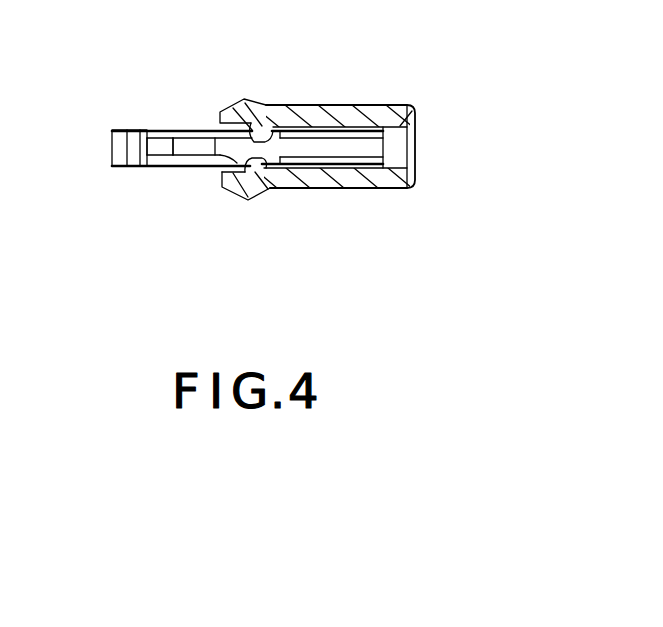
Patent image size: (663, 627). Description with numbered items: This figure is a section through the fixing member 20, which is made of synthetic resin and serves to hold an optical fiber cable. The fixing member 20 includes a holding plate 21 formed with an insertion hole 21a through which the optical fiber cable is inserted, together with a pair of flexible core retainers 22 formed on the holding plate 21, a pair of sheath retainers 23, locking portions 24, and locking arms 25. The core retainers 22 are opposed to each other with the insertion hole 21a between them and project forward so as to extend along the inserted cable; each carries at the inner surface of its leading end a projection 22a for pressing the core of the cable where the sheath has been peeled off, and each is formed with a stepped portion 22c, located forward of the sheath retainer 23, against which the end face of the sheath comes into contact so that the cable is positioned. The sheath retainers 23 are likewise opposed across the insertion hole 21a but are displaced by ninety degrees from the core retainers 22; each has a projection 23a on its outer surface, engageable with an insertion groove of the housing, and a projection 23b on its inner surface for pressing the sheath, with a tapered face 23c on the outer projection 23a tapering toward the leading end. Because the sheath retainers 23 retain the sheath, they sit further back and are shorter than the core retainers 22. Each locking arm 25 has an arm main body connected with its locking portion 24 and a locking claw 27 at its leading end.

The fixing member 20 is at (412, 78).
The holding plate 21 is at (398, 120).
The insertion hole 21a is at (400, 161).
The core retainer 22 is at (195, 149).
The projection 22a is at (140, 167).
The stepped portion 22c is at (244, 167).
The sheath retainer 23 is at (323, 108).
The projection 23a is at (243, 101).
The projection 23b is at (262, 115).
The tapered face 23c is at (222, 190).
The locking portion 24 is at (248, 138).
The locking arm 25 is at (157, 150).
The locking claw 27 is at (110, 146).